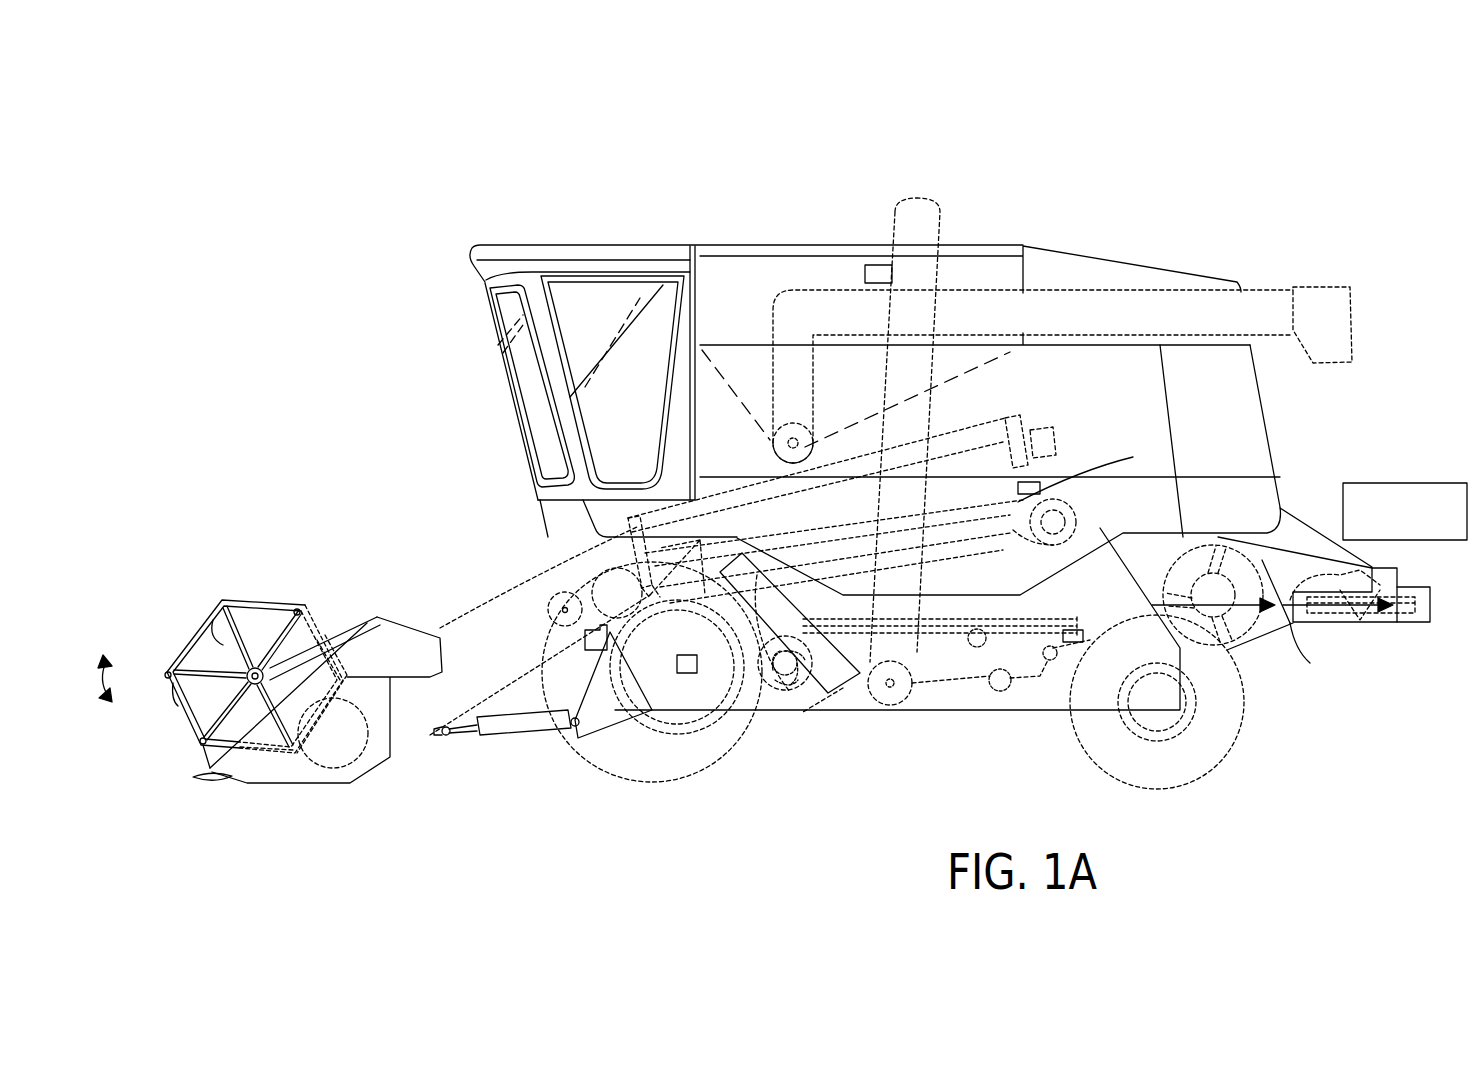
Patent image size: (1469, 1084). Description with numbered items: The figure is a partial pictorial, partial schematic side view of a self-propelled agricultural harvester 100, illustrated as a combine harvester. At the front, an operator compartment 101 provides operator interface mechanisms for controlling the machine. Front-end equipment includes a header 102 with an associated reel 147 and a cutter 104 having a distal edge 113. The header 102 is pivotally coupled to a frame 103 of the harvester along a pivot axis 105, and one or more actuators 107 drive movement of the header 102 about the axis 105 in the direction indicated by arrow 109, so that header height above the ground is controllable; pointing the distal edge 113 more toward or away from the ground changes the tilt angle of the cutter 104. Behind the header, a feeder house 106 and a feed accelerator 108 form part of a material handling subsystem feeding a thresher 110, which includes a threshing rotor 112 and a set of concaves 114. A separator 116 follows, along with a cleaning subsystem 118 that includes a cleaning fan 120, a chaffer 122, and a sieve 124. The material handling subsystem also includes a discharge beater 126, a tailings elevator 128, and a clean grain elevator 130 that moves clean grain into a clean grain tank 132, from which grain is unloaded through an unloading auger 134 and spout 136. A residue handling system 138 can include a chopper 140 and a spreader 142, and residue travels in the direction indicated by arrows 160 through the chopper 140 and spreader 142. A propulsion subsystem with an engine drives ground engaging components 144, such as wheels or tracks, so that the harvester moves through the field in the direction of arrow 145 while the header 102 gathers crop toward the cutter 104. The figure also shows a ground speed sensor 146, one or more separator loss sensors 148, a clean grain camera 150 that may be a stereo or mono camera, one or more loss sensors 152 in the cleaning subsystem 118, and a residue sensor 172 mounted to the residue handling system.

The agricultural harvester 100 is at (1218, 148).
The operator compartment 101 is at (588, 243).
The header 102 is at (277, 602).
The frame 103 is at (650, 712).
The cutter 104 is at (247, 800).
The pivot axis 105 is at (565, 608).
The feeder house 106 is at (475, 612).
The actuator 107 is at (487, 737).
The feed accelerator 108 is at (606, 606).
The arrow 109 is at (112, 682).
The thresher 110 is at (955, 418).
The threshing rotor 112 is at (1005, 420).
The distal edge 113 is at (197, 774).
The set of concaves 114 is at (1093, 475).
The separator 116 is at (947, 543).
The cleaning subsystem 118 is at (1077, 668).
The cleaning fan 120 is at (752, 685).
The chaffer 122 is at (1075, 585).
The sieve 124 is at (1003, 632).
The discharge beater 126 is at (1077, 513).
The tailings elevator 128 is at (838, 693).
The clean grain elevator 130 is at (913, 648).
The clean grain tank 132 is at (733, 330).
The unloading auger 134 is at (813, 445).
The spout 136 is at (1320, 288).
The residue handling system 138 is at (1318, 510).
The chopper 140 is at (1236, 652).
The spreader 142 is at (1325, 633).
The ground engaging components 144 is at (583, 752).
The arrow 145 is at (430, 448).
The ground speed sensor 146 is at (687, 673).
The reel 147 is at (190, 648).
The separator loss sensor 148 is at (1018, 485).
The clean grain camera 150 is at (866, 263).
The loss sensor 152 is at (1093, 638).
The arrows 160 is at (1310, 663).
The residue sensor 172 is at (1398, 548).